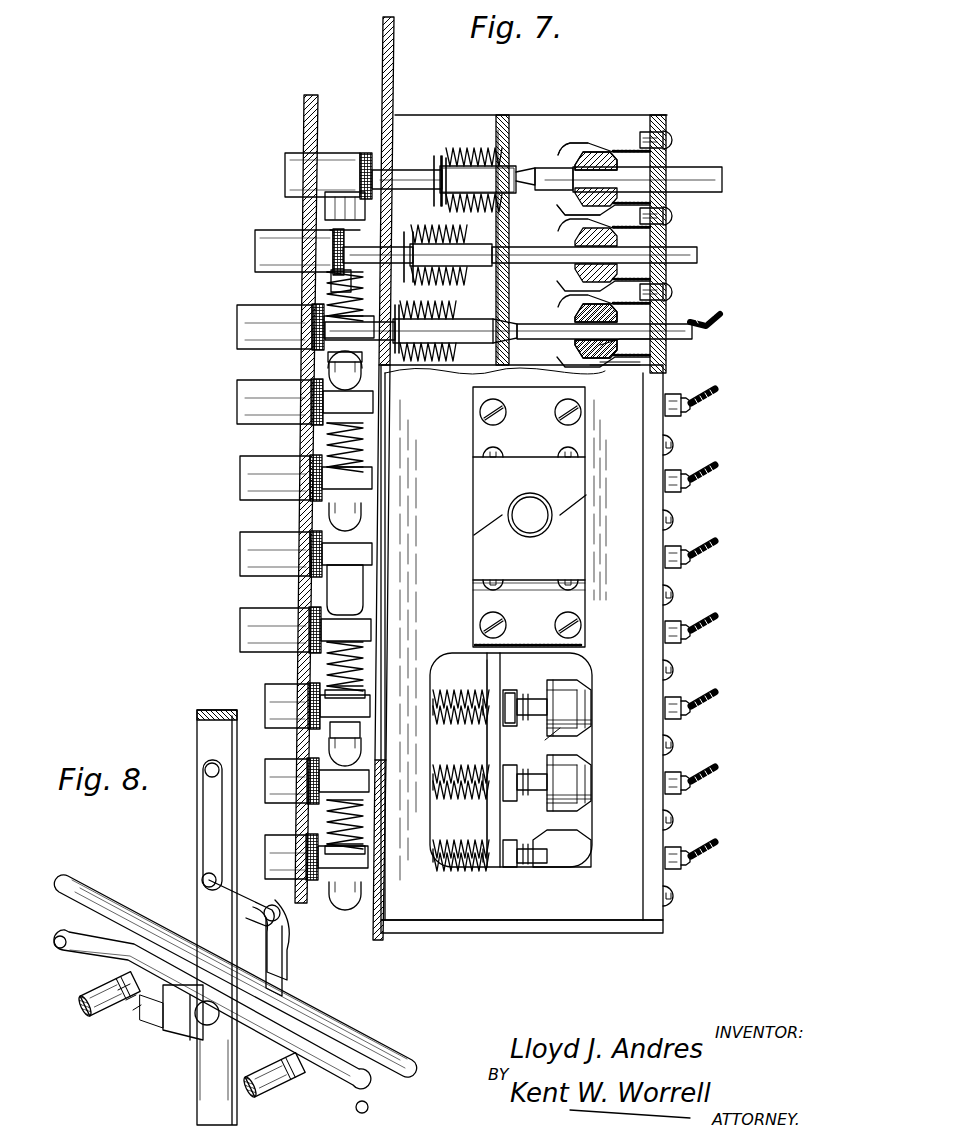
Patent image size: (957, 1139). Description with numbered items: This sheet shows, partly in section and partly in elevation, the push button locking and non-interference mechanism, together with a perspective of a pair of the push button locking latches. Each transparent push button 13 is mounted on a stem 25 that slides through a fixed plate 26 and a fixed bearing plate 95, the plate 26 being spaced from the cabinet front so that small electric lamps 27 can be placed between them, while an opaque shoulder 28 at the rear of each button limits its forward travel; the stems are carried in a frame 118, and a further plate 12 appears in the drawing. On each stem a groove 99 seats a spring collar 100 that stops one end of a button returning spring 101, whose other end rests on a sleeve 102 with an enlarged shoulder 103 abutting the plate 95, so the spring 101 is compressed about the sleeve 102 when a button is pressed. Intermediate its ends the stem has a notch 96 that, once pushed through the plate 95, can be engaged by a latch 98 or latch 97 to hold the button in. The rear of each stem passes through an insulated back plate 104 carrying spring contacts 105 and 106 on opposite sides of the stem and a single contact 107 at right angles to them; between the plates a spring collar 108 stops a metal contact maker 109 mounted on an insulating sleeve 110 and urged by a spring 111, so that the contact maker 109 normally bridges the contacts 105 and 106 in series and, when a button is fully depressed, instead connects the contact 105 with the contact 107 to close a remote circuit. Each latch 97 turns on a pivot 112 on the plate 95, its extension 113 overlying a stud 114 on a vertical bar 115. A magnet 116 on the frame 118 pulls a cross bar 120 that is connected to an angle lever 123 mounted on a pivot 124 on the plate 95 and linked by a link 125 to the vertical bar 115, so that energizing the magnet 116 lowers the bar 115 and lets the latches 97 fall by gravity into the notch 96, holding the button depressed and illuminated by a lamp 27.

In FIG. 7, the support bar 12 is at (304, 119).
In FIG. 7, the push button 13 is at (300, 178).
In FIG. 7, the stem 25 is at (422, 185).
In FIG. 7, the plate 26 is at (383, 66).
In FIG. 7, the electric lamp 27 is at (333, 204).
In FIG. 7, the shoulder 28 is at (370, 150).
In FIG. 7, the plate 95 is at (510, 130).
In FIG. 8, the plate 95 is at (103, 992).
In FIG. 7, the notch 96 is at (538, 191).
In FIG. 8, the notch 96 is at (130, 996).
In FIG. 7, the latch 97 is at (512, 170).
In FIG. 8, the latch 97 is at (137, 1005).
In FIG. 7, the latch 98 is at (560, 152).
In FIG. 8, the latch 98 is at (142, 1010).
In FIG. 7, the groove 99 is at (439, 166).
In FIG. 7, the spring collar 100 is at (462, 153).
In FIG. 7, the button returning spring 101 is at (472, 156).
In FIG. 7, the sleeve 102 is at (434, 289).
In FIG. 7, the enlarged shoulder 103 is at (478, 192).
In FIG. 7, the insulated back plate 104 is at (668, 160).
In FIG. 7, the spring contact 105 is at (595, 162).
In FIG. 7, the spring contact 106 is at (555, 740).
In FIG. 7, the contact 107 is at (673, 138).
In FIG. 7, the spring collar 108 is at (567, 342).
In FIG. 7, the contact maker 109 is at (578, 152).
In FIG. 7, the insulating sleeve 110 is at (558, 304).
In FIG. 7, the spring 111 is at (663, 350).
In FIG. 8, the pivot 112 is at (370, 1106).
In FIG. 8, the extension 113 is at (204, 947).
In FIG. 8, the stud 114 is at (200, 1025).
In FIG. 8, the vertical bar 115 is at (185, 905).
In FIG. 7, the magnet 116 is at (528, 522).
In FIG. 7, the frame 118 is at (640, 537).
In FIG. 8, the cross bar 120 is at (374, 1042).
In FIG. 8, the angle lever 123 is at (282, 988).
In FIG. 8, the pivot 124 is at (283, 928).
In FIG. 8, the link 125 is at (202, 836).